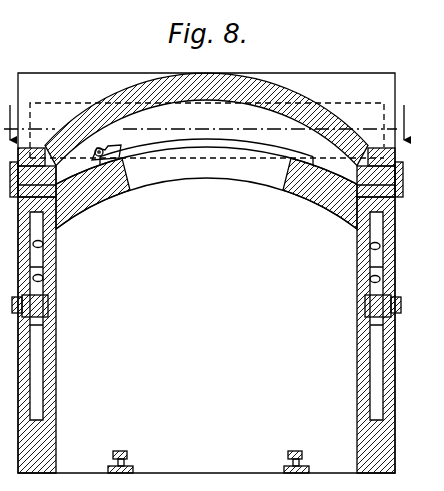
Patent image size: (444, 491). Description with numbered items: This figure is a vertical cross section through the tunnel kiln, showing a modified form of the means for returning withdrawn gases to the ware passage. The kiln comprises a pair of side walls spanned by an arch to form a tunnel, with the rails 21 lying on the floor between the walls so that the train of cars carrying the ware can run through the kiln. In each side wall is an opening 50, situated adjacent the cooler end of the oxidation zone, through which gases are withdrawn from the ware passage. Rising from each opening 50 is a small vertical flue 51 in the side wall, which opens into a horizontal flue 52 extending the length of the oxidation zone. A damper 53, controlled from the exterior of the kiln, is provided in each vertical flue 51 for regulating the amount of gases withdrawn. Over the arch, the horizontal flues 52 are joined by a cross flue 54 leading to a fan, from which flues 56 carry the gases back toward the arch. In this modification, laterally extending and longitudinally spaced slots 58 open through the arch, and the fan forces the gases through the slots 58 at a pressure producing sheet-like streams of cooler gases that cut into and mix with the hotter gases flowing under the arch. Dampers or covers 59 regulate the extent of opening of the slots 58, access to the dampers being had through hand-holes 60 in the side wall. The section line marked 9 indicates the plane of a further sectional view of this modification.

The section line 9- 9 is at (206, 112).
The rails 21 is at (291, 453).
The openings 50 is at (46, 382).
The vertical flue 51 is at (43, 279).
The horizontal flue 52 is at (43, 244).
The damper 53 is at (49, 306).
The cross flue 54 is at (70, 103).
The flues 56 is at (229, 107).
The slots 58 is at (175, 168).
The dampers or covers 59 is at (104, 150).
The hand-holes 60 is at (69, 175).